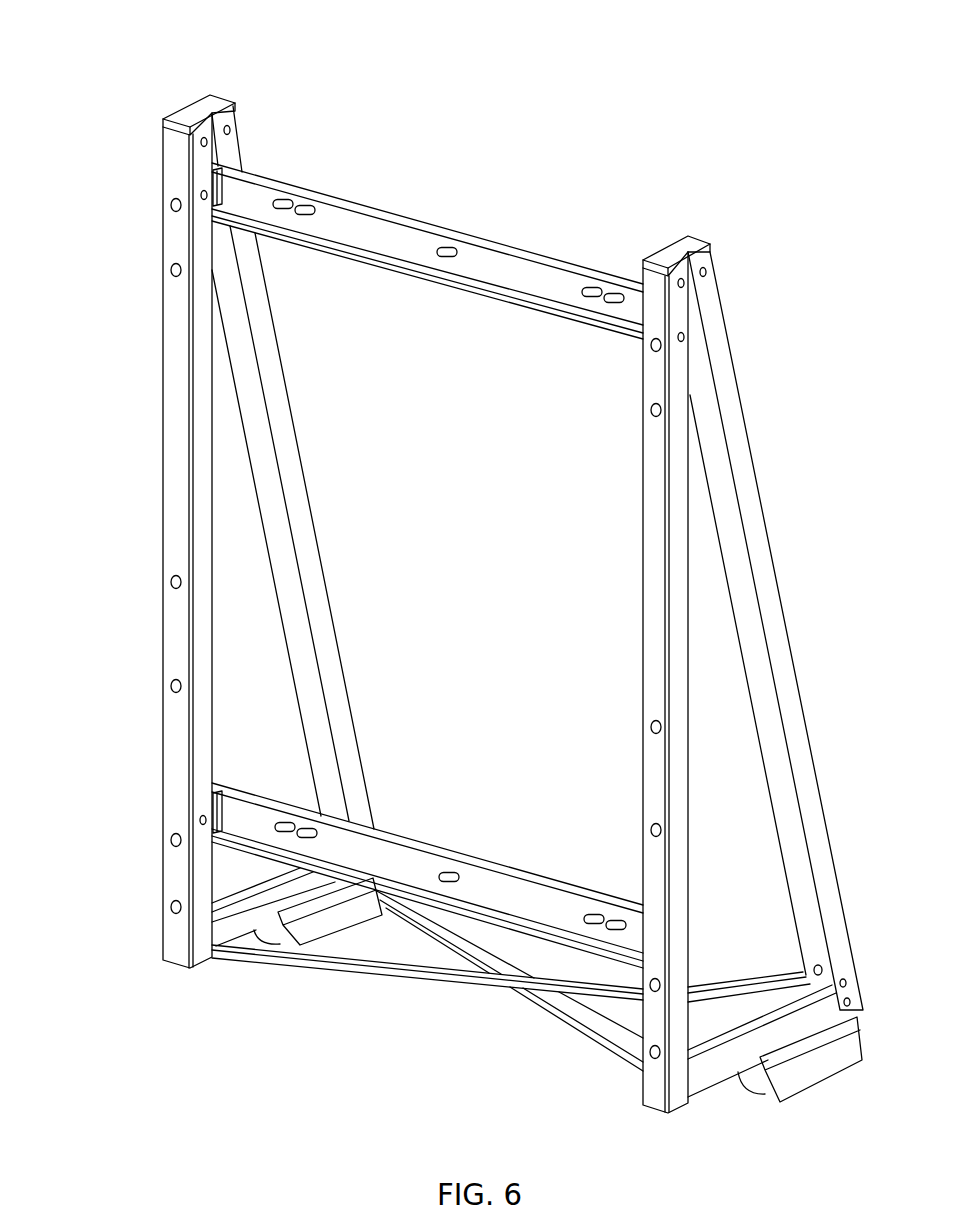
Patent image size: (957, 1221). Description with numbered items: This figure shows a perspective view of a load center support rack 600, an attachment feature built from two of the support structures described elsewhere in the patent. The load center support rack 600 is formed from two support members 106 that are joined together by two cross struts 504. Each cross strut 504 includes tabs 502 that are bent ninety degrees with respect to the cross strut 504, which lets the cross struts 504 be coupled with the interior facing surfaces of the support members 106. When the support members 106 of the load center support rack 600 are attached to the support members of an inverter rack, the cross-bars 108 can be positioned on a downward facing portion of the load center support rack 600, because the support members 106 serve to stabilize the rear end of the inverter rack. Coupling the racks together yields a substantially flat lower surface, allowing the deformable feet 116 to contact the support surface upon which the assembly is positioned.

The load center support rack 600 is at (116, 78).
The support member 106 is at (136, 470).
The cross strut 504 is at (422, 195).
The tab 502 is at (225, 180).
The cross-bar 108 is at (395, 982).
The deformable foot 116 is at (354, 926).